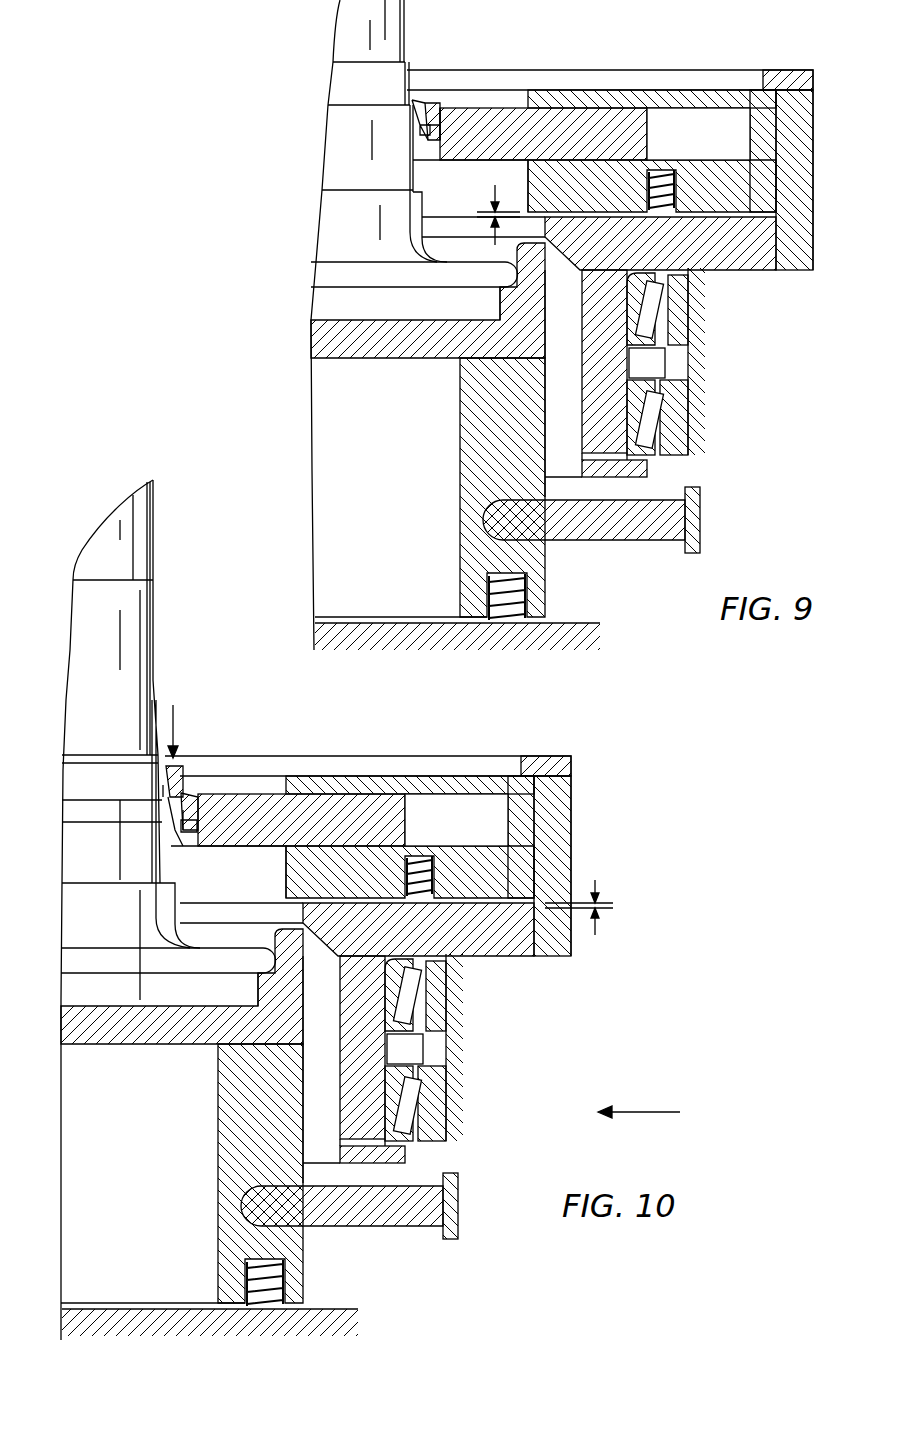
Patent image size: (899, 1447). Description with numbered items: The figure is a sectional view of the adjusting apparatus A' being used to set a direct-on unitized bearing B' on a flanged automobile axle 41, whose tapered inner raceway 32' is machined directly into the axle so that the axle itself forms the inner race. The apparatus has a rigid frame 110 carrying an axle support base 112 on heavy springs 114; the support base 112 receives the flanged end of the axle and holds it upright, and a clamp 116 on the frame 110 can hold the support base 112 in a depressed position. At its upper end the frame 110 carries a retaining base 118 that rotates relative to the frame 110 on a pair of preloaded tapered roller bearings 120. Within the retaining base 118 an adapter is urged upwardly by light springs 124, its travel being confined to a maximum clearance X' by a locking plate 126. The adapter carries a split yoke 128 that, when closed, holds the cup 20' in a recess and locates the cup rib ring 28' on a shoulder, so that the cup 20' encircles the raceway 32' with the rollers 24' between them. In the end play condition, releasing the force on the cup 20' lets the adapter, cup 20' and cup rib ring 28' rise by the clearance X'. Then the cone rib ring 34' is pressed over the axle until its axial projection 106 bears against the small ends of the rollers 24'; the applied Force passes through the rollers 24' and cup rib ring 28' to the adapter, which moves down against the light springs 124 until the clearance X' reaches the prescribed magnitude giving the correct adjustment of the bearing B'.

In FIG. 9, the turbine blade 41 is at (338, 34).
In FIG. 10, the turbine blade 41 is at (147, 627).
In FIG. 9, the tapered inner raceway 32' is at (334, 147).
In FIG. 10, the tapered inner raceway 32' is at (84, 825).
In FIG. 9, the cup 20' is at (457, 79).
In FIG. 10, the cup 20' is at (245, 778).
In FIG. 9, the rollers 24' is at (390, 106).
In FIG. 10, the rollers 24' is at (147, 841).
In FIG. 9, the cup rib ring 28' is at (470, 181).
In FIG. 10, the cup rib ring 28' is at (228, 857).
In FIG. 10, the cone rib ring 34' is at (213, 754).
In FIG. 10, the axial projection 106 is at (163, 790).
In FIG. 9, the rigid frame 110 is at (700, 366).
In FIG. 10, the rigid frame 110 is at (448, 1062).
In FIG. 9, the axle support base 112 is at (470, 428).
In FIG. 10, the axle support base 112 is at (228, 1105).
In FIG. 9, the heavy springs 114 is at (490, 588).
In FIG. 10, the heavy springs 114 is at (245, 1283).
In FIG. 9, the clamp 116 is at (616, 535).
In FIG. 10, the clamp 116 is at (372, 1222).
In FIG. 9, the retaining base 118 is at (765, 262).
In FIG. 10, the retaining base 118 is at (540, 950).
In FIG. 9, the preloaded tapered roller bearings 120 is at (660, 316).
In FIG. 10, the preloaded tapered roller bearings 120 is at (418, 1002).
In FIG. 9, the light springs 124 is at (680, 198).
In FIG. 10, the light springs 124 is at (437, 890).
In FIG. 9, the locking plate 126 is at (772, 76).
In FIG. 10, the locking plate 126 is at (530, 762).
In FIG. 9, the split yoke 128 is at (508, 118).
In FIG. 10, the split yoke 128 is at (343, 802).
In FIG. 9, the maximum clearance X' is at (498, 208).
In FIG. 10, the maximum clearance X' is at (579, 897).
In FIG. 10, the adjusting apparatus A' is at (661, 1106).
In FIG. 10, the direct-on unitized bearing B' is at (112, 734).
In FIG. 10, the applied force Force is at (193, 721).